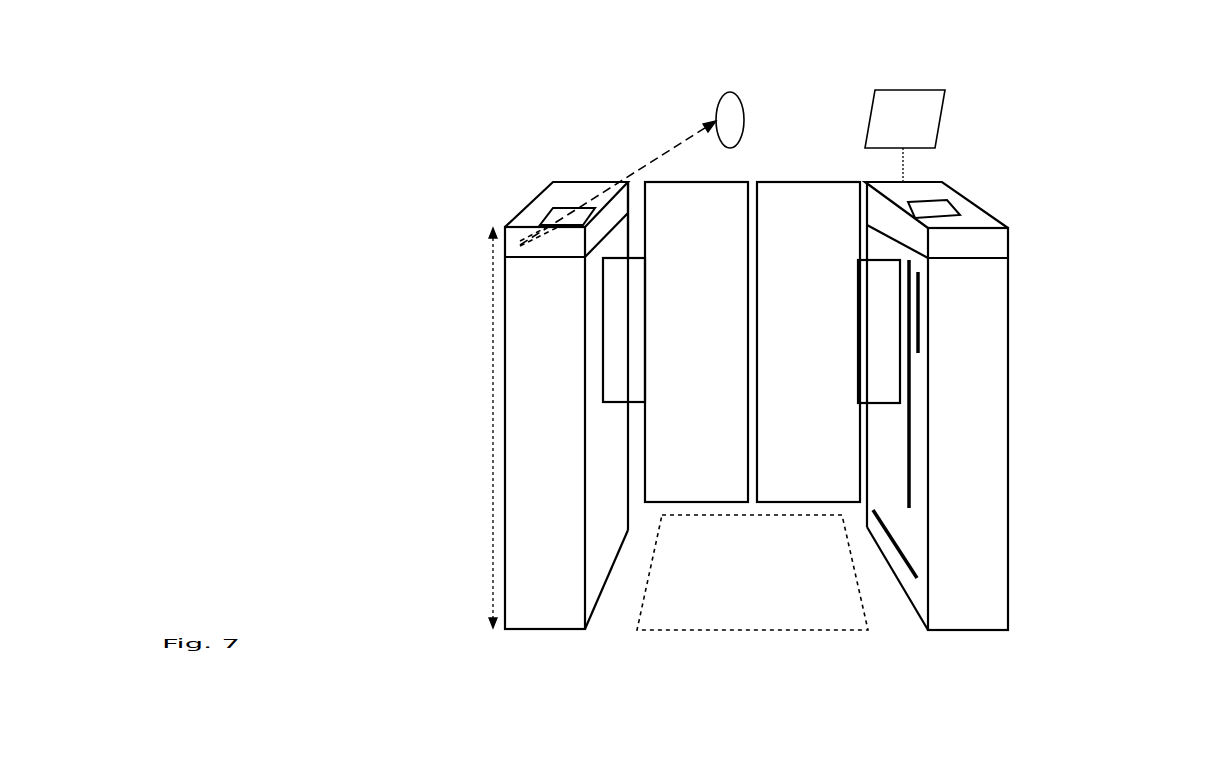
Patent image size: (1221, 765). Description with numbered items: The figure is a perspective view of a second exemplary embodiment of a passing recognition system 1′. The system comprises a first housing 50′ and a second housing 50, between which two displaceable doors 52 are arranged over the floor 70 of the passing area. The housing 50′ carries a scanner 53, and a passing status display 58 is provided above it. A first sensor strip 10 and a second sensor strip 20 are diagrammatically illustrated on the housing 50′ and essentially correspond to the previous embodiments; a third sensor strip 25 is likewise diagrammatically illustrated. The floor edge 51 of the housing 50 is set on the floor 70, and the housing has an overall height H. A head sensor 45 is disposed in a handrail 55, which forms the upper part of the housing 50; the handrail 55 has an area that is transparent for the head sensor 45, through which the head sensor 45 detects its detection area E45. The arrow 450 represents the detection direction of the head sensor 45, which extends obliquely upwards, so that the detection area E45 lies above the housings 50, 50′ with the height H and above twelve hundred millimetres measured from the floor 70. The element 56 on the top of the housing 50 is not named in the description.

The passing recognition system 1′ is at (850, 86).
The first sensor strip 10 is at (912, 470).
The second sensor strip 20 is at (918, 330).
The third sensor strip 25 is at (917, 565).
The head sensor 45 is at (525, 240).
The detection area E45 is at (745, 115).
The arrow 450 is at (648, 170).
The second housing 50 is at (505, 400).
The first housing 50′ is at (1010, 385).
The floor edge 51 is at (585, 630).
The displaceable doors 52 is at (708, 370).
The scanner 53 is at (950, 208).
The handrail 55 is at (635, 205).
The sensor window on left pillar 56 is at (555, 212).
The passing status display 58 is at (912, 130).
The floor 70 is at (760, 583).
The overall height H is at (485, 428).